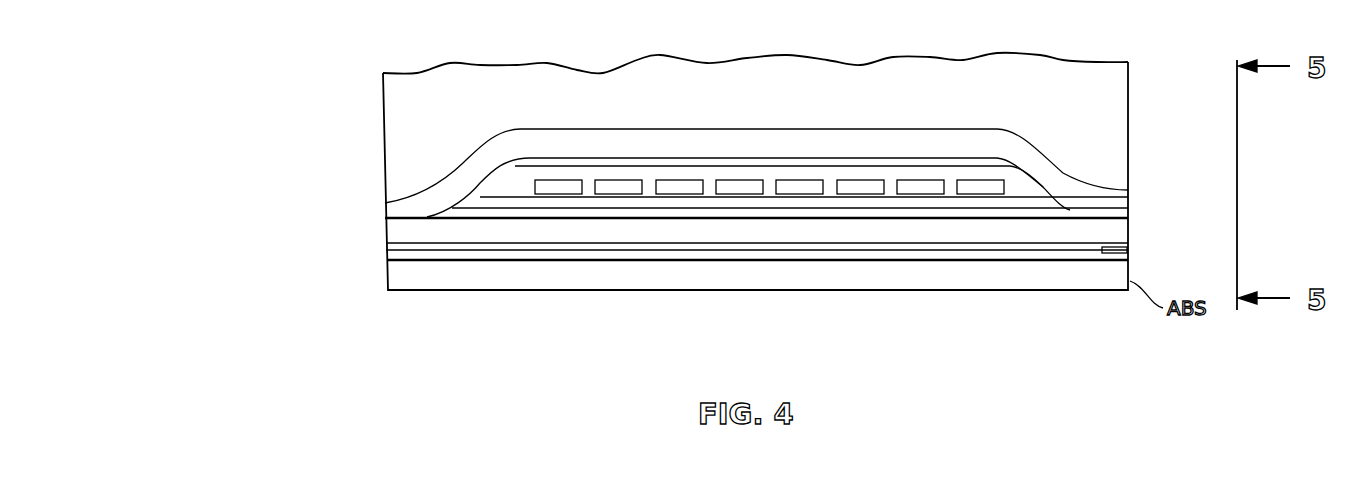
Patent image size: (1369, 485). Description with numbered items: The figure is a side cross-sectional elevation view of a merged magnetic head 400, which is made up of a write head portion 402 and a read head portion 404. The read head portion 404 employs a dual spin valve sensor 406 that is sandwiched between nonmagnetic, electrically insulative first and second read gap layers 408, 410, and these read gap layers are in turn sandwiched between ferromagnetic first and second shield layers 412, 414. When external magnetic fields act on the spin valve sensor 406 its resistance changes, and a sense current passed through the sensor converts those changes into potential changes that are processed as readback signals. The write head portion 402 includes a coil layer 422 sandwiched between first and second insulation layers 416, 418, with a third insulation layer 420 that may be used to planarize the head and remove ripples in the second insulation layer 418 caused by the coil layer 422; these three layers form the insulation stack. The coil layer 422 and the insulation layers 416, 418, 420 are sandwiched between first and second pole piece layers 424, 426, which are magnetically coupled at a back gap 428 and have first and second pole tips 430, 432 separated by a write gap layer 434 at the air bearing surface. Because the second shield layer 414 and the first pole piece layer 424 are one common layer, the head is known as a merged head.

The merged magnetic head 400 is at (345, 86).
The write head portion 402 is at (372, 242).
The read head portion 404 is at (370, 295).
The dual spin valve sensor 406 is at (1130, 251).
The first read gap layer 408 is at (813, 258).
The second read gap layer 410 is at (777, 240).
The first shield layer 412 is at (885, 277).
The second shield layer 414 is at (983, 287).
The first pole piece layer 424 is at (980, 230).
The first insulation layer 416 is at (685, 203).
The second insulation layer 418 is at (1017, 185).
The third insulation layer 420 is at (590, 158).
The coil layer 422 is at (798, 188).
The second pole piece layer 426 is at (897, 143).
The back gap 428 is at (422, 217).
The first pole tip 430 is at (1123, 230).
The second pole tip 432 is at (1123, 199).
The write gap layer 434 is at (1123, 214).